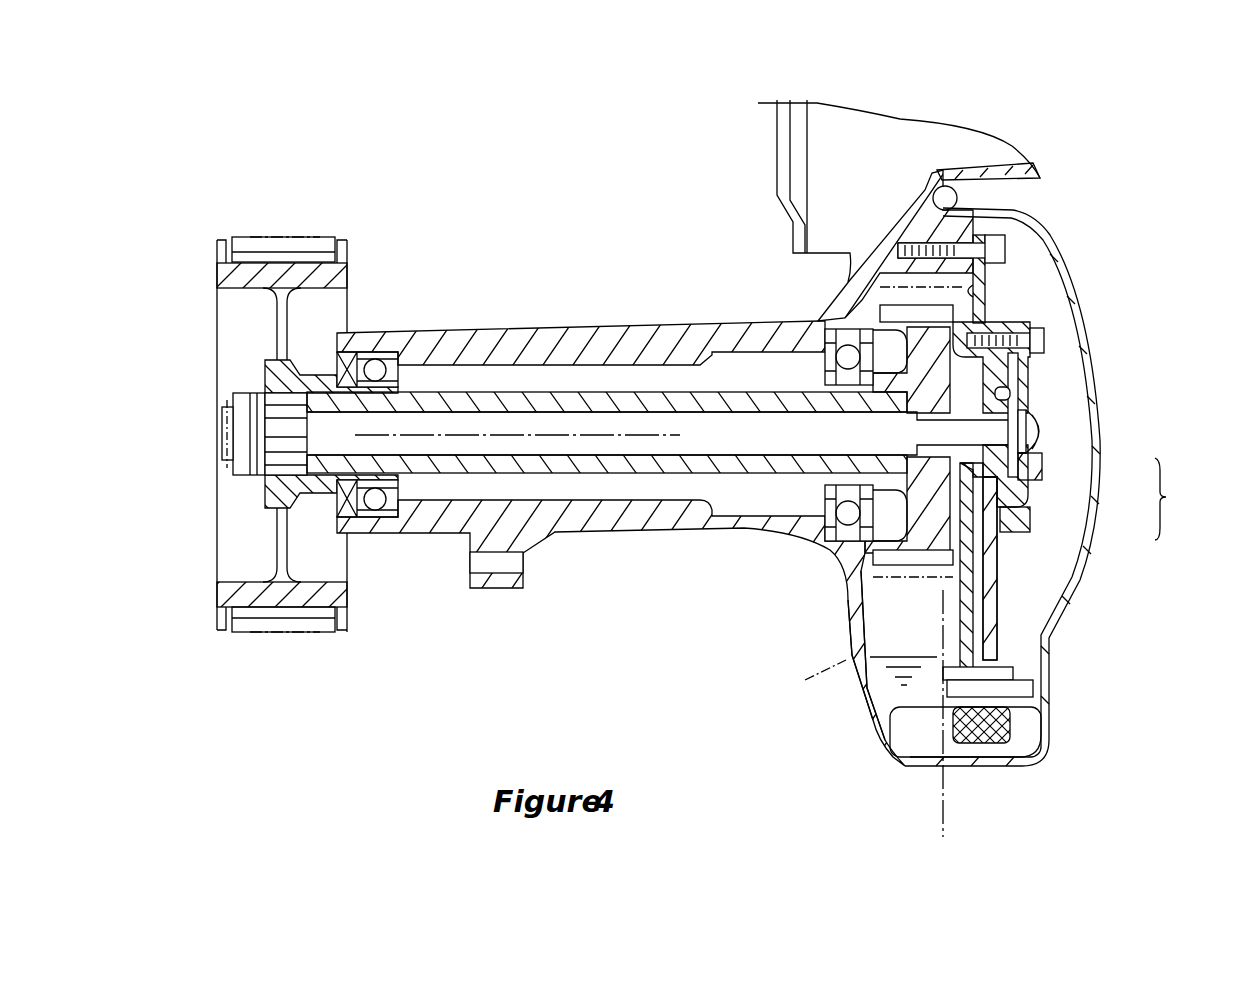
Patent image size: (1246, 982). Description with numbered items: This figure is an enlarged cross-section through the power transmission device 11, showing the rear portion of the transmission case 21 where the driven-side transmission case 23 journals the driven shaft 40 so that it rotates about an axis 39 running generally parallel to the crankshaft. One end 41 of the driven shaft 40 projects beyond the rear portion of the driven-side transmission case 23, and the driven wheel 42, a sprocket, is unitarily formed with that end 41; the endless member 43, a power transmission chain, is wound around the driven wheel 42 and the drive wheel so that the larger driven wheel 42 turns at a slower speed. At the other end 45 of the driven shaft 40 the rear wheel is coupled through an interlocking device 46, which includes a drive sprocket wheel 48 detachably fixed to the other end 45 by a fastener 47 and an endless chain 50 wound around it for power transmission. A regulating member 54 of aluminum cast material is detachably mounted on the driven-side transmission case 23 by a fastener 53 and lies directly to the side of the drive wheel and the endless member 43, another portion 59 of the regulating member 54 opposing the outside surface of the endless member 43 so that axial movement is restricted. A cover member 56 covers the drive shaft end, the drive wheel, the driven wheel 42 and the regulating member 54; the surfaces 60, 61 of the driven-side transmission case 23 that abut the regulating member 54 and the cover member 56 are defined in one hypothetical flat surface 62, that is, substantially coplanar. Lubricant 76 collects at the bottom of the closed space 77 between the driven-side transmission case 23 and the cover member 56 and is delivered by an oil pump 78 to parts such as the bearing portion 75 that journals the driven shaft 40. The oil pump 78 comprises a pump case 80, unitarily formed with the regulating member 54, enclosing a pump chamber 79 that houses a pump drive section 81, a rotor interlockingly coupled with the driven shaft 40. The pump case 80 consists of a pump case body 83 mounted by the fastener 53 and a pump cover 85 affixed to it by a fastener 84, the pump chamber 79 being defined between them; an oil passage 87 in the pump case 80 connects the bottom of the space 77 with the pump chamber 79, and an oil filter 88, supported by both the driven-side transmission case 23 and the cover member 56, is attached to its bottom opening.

The power transmission device 11 is at (1139, 154).
The transmission case 21 is at (532, 236).
The driven-side transmission case 23 is at (609, 316).
The axis 39 is at (650, 435).
The driven shaft 40 is at (585, 485).
The one end 41 is at (837, 473).
The driven wheel 42 is at (846, 602).
The endless member 43 is at (810, 678).
The other end 45 is at (285, 395).
The interlocking device 46 is at (208, 259).
The fastener 47 is at (240, 470).
The drive sprocket wheel 48 is at (270, 240).
The endless chain 50 is at (313, 242).
The fastener 53 is at (1007, 242).
The regulating member 54 is at (1009, 568).
The cover member 56 is at (1067, 603).
The another portion 59 is at (985, 286).
The surface 60 is at (973, 232).
The surface 61 is at (960, 208).
The hypothetical flat surface 62 is at (948, 827).
The bearing portion 75 is at (830, 313).
The lubricant 76 is at (912, 683).
The closed space 77 is at (1028, 640).
The oil pump 78 is at (990, 568).
The pump chamber 79 is at (1000, 393).
The pump case 80 is at (1182, 499).
The pump drive section 81 is at (1050, 433).
The pump case body 83 is at (1000, 533).
The fastener 84 is at (1045, 340).
The pump cover 85 is at (1020, 473).
The oil passage 87 is at (985, 650).
The oil filter 88 is at (1010, 733).